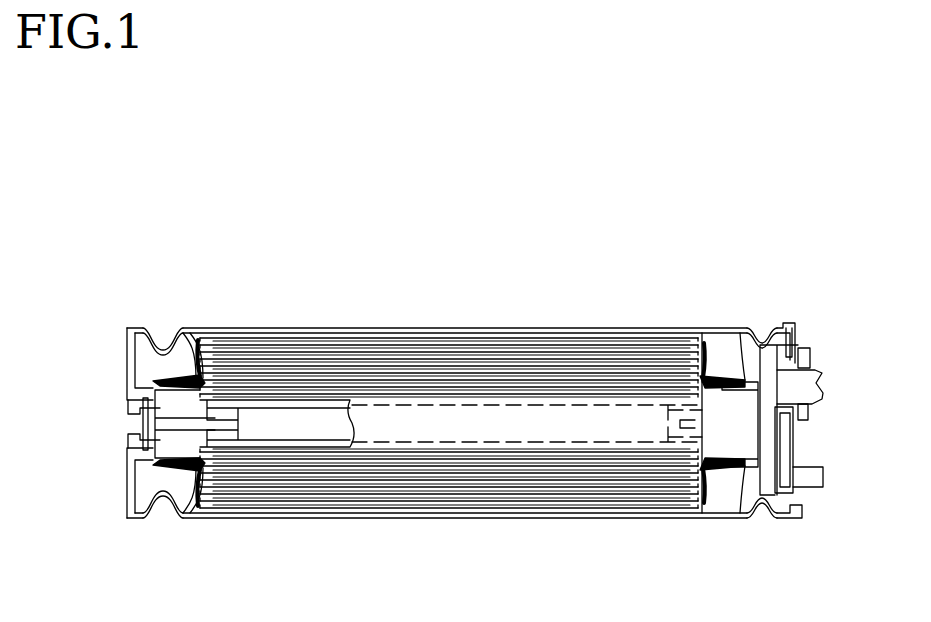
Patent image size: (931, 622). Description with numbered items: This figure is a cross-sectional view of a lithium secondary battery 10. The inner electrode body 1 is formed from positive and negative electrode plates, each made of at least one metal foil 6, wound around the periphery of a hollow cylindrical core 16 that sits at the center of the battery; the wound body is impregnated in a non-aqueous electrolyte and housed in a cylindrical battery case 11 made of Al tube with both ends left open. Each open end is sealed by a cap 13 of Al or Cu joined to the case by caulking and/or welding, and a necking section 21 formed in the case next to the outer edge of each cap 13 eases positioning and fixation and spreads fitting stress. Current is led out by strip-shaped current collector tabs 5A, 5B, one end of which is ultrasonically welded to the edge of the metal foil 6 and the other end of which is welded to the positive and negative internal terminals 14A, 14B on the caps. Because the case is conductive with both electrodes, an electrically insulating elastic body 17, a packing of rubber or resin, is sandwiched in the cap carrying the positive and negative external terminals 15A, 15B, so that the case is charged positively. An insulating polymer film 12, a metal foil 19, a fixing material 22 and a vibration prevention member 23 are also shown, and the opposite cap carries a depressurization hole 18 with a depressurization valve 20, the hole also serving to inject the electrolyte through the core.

The inner electrode body 1 is at (449, 472).
The positive current collector tab 5A is at (176, 378).
The negative current collector tab 5B is at (707, 364).
The metal foil 6 is at (683, 484).
The battery 10 is at (451, 298).
The battery case 11 is at (545, 328).
The insulating polymer film 12 is at (583, 514).
The cap 13 is at (838, 388).
The positive internal terminal 14A is at (173, 464).
The negative internal terminal 14B is at (736, 388).
The positive external terminal 15A is at (819, 488).
The negative external terminal 15B is at (818, 377).
The core 16 is at (312, 402).
The elastic body 17 is at (806, 340).
The depressurization hole 18 is at (170, 432).
The metal foil 19 is at (147, 422).
The depressurization valve 20 is at (121, 408).
The necking section 21 is at (163, 322).
The fixing material 22 is at (808, 419).
The vibration prevention member 23 is at (740, 438).